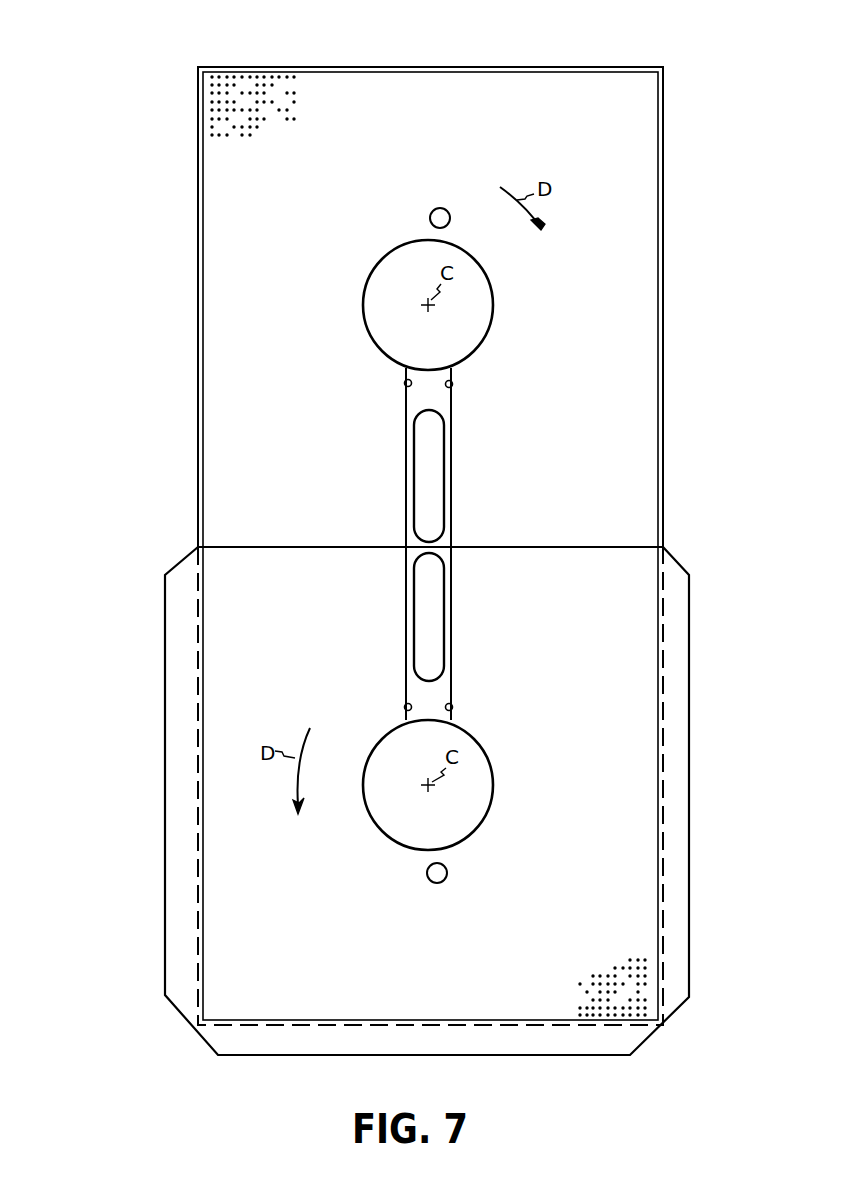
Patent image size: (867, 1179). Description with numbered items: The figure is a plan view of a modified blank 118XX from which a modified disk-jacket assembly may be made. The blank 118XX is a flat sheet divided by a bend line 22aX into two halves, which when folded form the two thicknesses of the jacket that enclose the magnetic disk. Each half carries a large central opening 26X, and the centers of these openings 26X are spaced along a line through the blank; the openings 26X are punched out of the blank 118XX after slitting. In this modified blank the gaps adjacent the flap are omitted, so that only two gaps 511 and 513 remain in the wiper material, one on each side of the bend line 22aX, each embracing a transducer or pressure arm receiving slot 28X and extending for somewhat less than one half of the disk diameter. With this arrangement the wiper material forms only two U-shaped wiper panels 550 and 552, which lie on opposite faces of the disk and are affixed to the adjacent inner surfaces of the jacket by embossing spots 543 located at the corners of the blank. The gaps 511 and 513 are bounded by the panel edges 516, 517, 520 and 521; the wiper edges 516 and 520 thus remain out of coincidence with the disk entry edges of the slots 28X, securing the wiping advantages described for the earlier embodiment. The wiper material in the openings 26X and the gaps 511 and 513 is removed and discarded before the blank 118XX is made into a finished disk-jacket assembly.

The embossing spots 543 is at (270, 75).
The blank 118XX is at (663, 303).
The central openings 26X is at (376, 270).
The panel edge 521 is at (404, 384).
The wiper edge 520 is at (453, 384).
The radial slots 28X is at (414, 431).
The gap 513 is at (441, 403).
The U-shaped wiper panel 552 is at (287, 478).
The bend line 22aX is at (620, 547).
The gap 511 is at (442, 692).
The wiper edge 516 is at (453, 707).
The panel edge 517 is at (404, 707).
The U-shaped wiper panel 550 is at (297, 960).